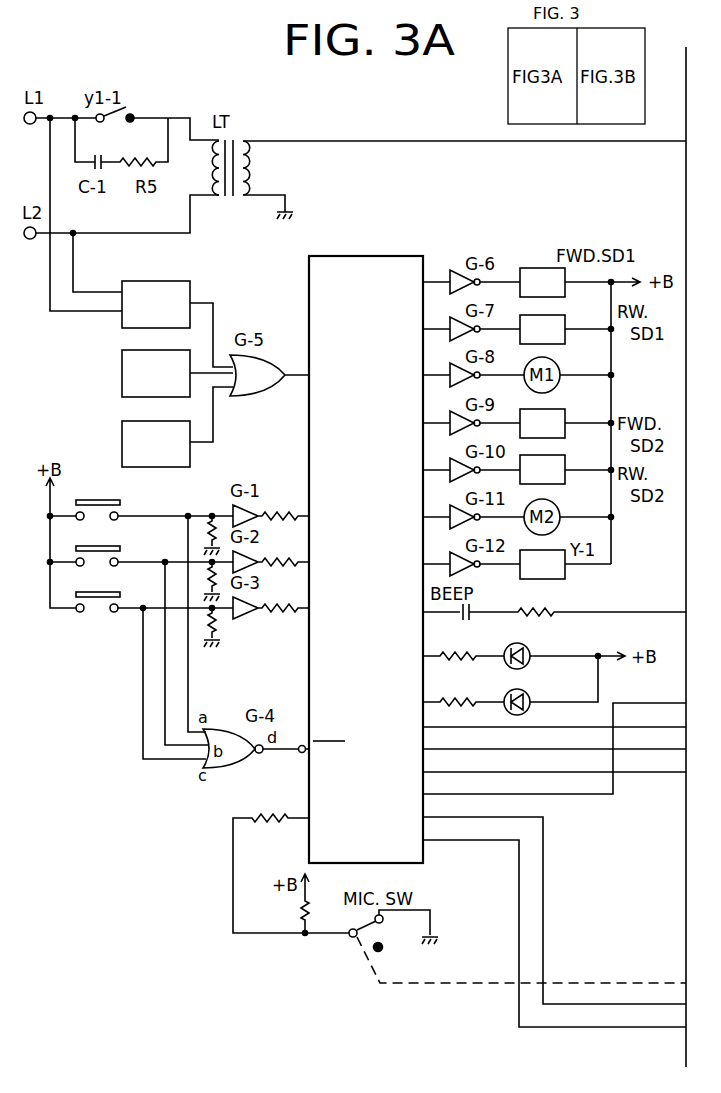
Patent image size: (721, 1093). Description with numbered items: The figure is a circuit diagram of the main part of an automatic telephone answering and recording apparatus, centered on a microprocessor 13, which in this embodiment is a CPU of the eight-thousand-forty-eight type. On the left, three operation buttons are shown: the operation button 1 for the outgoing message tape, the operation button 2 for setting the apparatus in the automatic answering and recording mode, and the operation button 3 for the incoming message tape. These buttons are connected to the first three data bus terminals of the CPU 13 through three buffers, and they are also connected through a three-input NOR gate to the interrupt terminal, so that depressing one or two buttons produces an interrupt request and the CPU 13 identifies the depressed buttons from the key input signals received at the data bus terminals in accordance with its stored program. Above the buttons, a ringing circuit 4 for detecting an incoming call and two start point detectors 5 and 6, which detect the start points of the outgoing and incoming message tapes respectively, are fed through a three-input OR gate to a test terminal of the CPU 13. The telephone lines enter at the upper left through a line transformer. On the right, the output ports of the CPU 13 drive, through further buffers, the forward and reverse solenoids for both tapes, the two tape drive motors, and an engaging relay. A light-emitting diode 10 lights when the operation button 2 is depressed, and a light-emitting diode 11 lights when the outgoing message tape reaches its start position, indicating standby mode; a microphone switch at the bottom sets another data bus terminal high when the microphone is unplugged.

The operation button 1 is at (123, 500).
The operation button 2 is at (123, 546).
The operation button 3 is at (123, 592).
The ringing circuit 4 is at (173, 281).
The start point detector 5 is at (122, 375).
The start point detector 6 is at (122, 442).
The light-emitting diode 10 is at (508, 646).
The light-emitting diode 11 is at (508, 692).
The microprocessor 13 is at (384, 256).